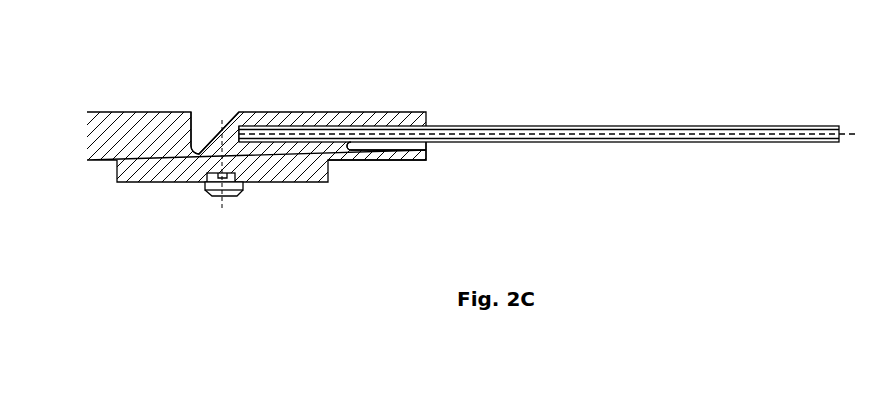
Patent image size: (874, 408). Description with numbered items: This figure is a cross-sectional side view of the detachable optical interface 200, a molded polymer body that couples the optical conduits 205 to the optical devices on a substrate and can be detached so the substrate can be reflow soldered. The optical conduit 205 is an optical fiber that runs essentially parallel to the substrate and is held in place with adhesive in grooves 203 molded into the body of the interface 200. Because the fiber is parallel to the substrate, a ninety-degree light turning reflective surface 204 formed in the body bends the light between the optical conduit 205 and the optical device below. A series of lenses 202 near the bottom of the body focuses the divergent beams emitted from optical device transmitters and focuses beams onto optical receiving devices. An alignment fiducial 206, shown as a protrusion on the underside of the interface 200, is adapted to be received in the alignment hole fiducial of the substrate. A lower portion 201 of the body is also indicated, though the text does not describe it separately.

The detachable optical interface 200 is at (263, 33).
The mounting block flange 201 is at (382, 153).
The lenses 202 is at (228, 185).
The grooves 203 is at (403, 135).
The light turning reflective surface 204 is at (228, 123).
The optical conduit 205 is at (715, 126).
The alignment fiducial 206 is at (215, 197).